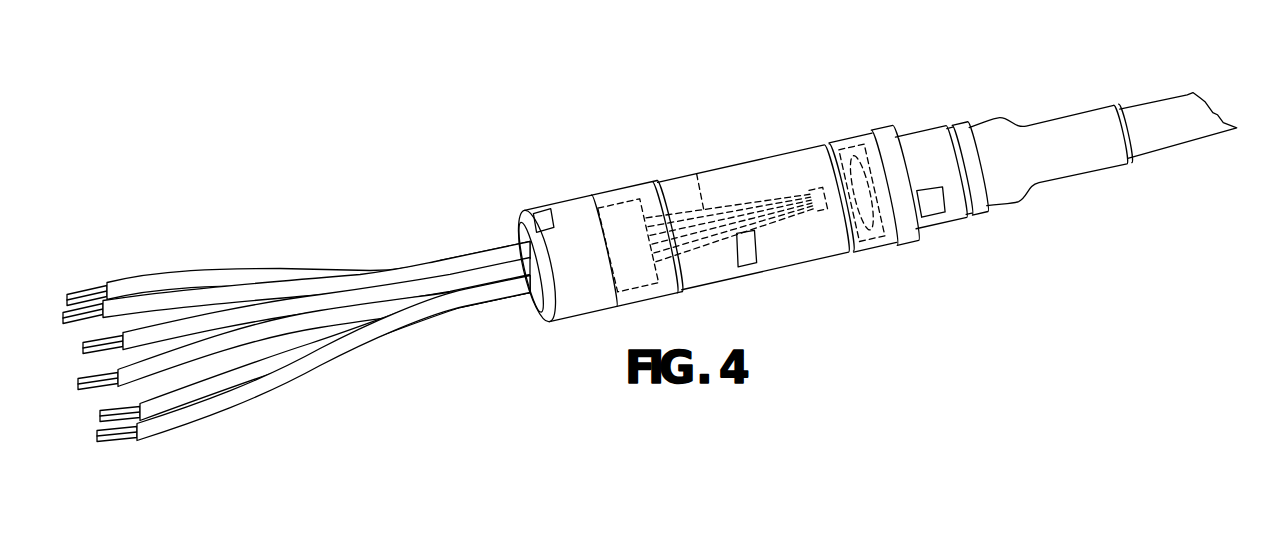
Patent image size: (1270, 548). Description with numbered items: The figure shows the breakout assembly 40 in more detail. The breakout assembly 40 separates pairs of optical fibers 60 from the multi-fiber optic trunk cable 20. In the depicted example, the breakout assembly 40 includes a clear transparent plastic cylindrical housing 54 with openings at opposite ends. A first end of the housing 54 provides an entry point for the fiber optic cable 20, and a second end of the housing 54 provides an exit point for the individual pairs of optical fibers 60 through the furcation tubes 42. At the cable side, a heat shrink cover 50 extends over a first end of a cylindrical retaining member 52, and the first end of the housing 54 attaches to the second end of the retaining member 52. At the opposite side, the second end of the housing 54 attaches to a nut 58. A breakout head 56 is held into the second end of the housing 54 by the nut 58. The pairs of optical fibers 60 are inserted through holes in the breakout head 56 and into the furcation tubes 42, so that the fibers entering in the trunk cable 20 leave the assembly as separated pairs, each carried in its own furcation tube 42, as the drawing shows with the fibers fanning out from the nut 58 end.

The multi-fiber optic cable 20 is at (1152, 101).
The breakout assembly 40 is at (576, 102).
The furcation tubes 42 is at (270, 268).
The heat shrink cover 50 is at (1032, 123).
The cylindrical retaining member 52 is at (917, 131).
The cylindrical housing 54 is at (737, 164).
The breakout head 56 is at (617, 190).
The nut 58 is at (556, 203).
The optical fibers 60 is at (87, 289).